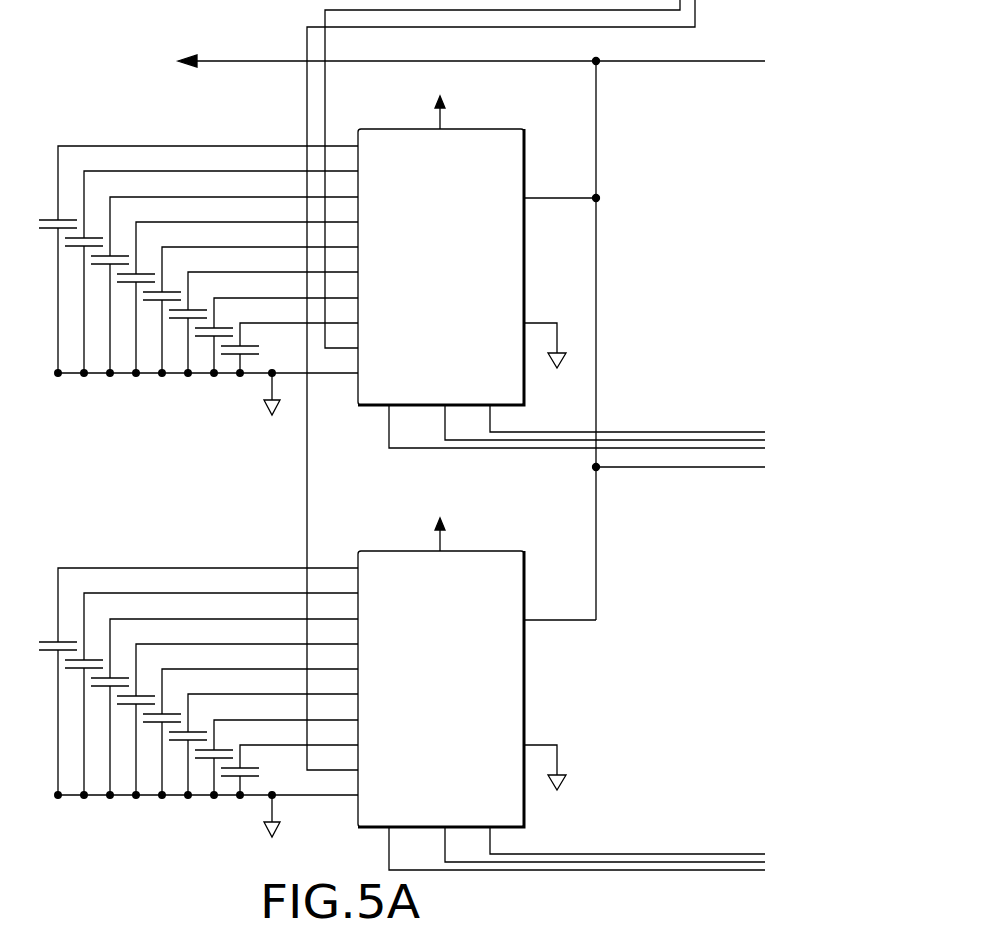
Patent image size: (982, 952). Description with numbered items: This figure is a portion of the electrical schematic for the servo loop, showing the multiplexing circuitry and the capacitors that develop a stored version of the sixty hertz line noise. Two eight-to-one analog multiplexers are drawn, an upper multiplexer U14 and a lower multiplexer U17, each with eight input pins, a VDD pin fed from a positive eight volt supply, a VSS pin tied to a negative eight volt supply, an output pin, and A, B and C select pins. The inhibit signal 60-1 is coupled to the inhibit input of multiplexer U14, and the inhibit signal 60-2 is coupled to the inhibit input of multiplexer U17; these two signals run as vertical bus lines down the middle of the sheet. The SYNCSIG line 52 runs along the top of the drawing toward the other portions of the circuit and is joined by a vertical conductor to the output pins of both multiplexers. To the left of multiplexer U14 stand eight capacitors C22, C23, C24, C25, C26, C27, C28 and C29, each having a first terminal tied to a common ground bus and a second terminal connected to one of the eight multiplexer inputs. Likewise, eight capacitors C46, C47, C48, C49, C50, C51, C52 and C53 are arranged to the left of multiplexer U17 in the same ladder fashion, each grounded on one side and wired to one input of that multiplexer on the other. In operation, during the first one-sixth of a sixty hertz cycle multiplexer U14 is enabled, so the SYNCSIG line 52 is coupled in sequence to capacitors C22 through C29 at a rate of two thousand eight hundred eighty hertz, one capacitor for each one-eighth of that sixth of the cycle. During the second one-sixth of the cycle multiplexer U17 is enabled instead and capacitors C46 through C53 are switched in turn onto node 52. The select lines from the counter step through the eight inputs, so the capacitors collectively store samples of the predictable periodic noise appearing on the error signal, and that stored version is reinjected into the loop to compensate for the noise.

The SYNCSIG line 52 is at (260, 61).
The inhibit signal 60-1 is at (326, 92).
The inhibit signal 60-2 is at (307, 100).
The analog multiplexer U14 is at (561, 261).
The analog multiplexer U17 is at (561, 683).
The capacitor C22 is at (66, 217).
The capacitor C23 is at (92, 235).
The capacitor C24 is at (118, 253).
The capacitor C25 is at (144, 271).
The capacitor C26 is at (170, 289).
The capacitor C27 is at (196, 307).
The capacitor C28 is at (222, 325).
The capacitor C29 is at (249, 357).
The capacitor C46 is at (66, 639).
The capacitor C47 is at (92, 657).
The capacitor C48 is at (118, 675).
The capacitor C49 is at (144, 693).
The capacitor C50 is at (170, 711).
The capacitor C51 is at (196, 729).
The capacitor C52 is at (222, 747).
The capacitor C53 is at (249, 779).